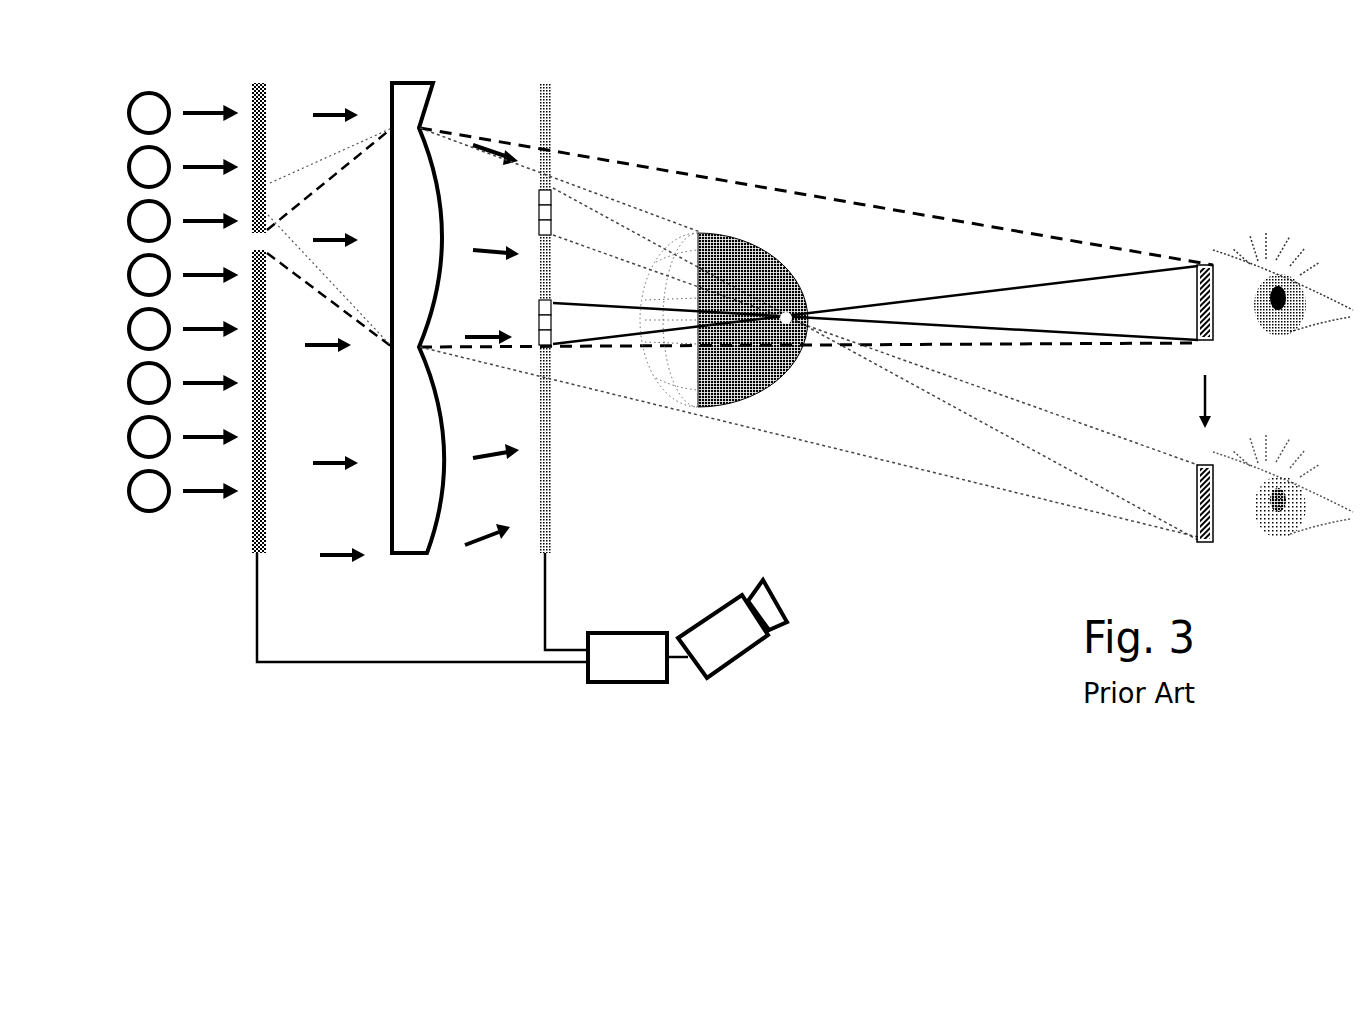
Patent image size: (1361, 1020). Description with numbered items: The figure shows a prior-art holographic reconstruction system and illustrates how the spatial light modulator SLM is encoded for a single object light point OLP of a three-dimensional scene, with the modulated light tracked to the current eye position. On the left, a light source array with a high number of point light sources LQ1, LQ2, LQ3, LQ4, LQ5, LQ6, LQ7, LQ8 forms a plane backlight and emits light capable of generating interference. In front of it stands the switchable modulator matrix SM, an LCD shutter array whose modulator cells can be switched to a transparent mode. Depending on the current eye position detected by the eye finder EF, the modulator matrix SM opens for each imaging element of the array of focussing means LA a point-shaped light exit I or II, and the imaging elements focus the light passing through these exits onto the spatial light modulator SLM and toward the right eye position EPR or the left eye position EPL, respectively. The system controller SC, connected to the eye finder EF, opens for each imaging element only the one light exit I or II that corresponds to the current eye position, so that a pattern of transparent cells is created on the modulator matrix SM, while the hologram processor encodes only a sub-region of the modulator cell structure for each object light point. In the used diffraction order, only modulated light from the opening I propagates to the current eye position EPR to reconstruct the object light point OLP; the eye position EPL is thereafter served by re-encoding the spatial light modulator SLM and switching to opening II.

The point light source LQ1 is at (150, 113).
The point light source LQ2 is at (150, 167).
The point light source LQ3 is at (150, 221).
The point light source LQ4 is at (150, 275).
The point light source LQ5 is at (150, 329).
The point light source LQ6 is at (150, 383).
The point light source LQ7 is at (150, 437).
The point light source LQ8 is at (150, 491).
The switchable modulator matrix SM is at (259, 304).
The light exit I is at (329, 281).
The light exit II is at (329, 179).
The array of focussing means LA is at (418, 304).
The spatial light modulator SLM is at (542, 304).
The object light point OLP is at (792, 314).
The right eye position EPR is at (1229, 312).
The left eye position EPL is at (1228, 519).
The system controller SC is at (472, 617).
The eye finder EF is at (732, 629).